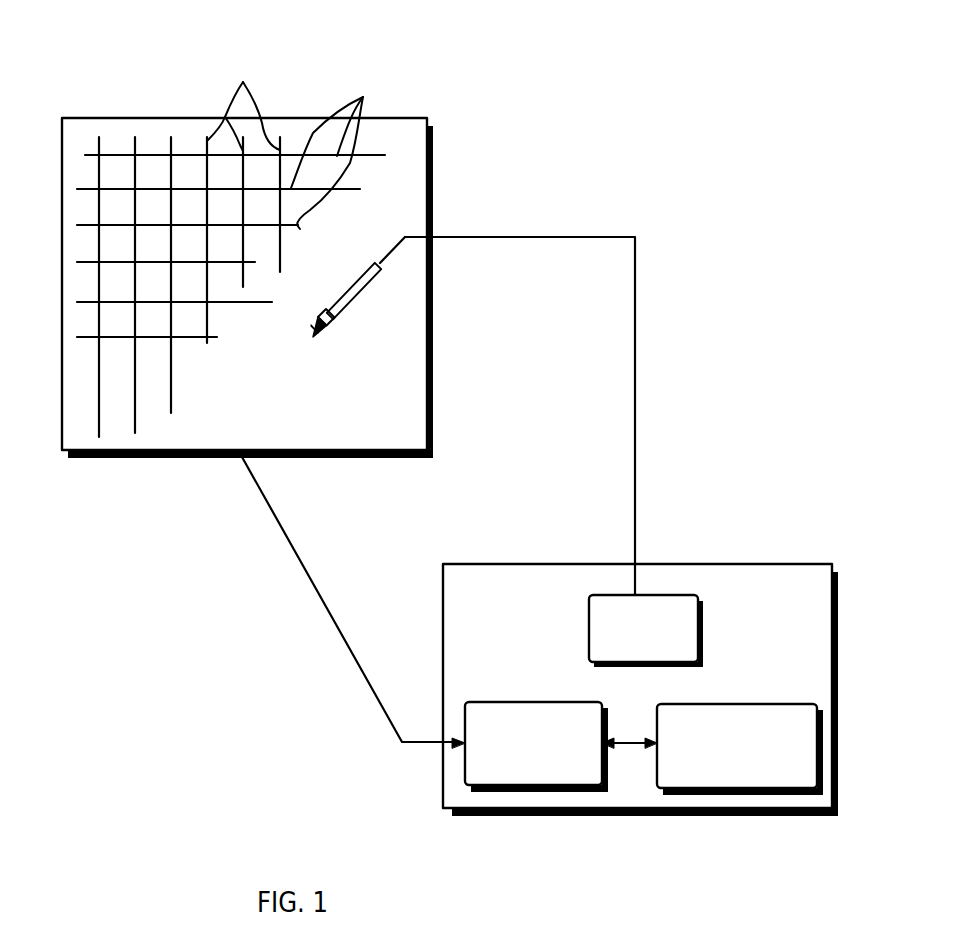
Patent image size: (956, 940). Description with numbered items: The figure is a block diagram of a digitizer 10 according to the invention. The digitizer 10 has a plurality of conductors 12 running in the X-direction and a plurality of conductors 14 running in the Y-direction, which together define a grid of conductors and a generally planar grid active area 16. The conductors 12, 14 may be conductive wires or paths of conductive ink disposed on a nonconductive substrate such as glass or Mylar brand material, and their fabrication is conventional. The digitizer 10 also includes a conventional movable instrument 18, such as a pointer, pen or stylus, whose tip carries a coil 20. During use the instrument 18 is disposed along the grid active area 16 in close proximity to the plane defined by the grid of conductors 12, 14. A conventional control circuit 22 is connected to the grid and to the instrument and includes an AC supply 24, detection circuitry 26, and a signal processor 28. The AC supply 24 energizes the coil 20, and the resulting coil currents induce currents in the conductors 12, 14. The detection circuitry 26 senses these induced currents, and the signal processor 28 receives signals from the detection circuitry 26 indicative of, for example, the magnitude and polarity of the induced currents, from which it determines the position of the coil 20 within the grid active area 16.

The digitizer 10 is at (600, 85).
The conductors in the X-direction 12 is at (363, 97).
The conductors in the Y-direction 14 is at (243, 82).
The grid active area 16 is at (137, 457).
The movable instrument 18 is at (358, 297).
The coil 20 is at (314, 337).
The control circuit 22 is at (518, 645).
The AC supply 24 is at (698, 632).
The detection circuitry 26 is at (552, 703).
The signal processor 28 is at (731, 704).